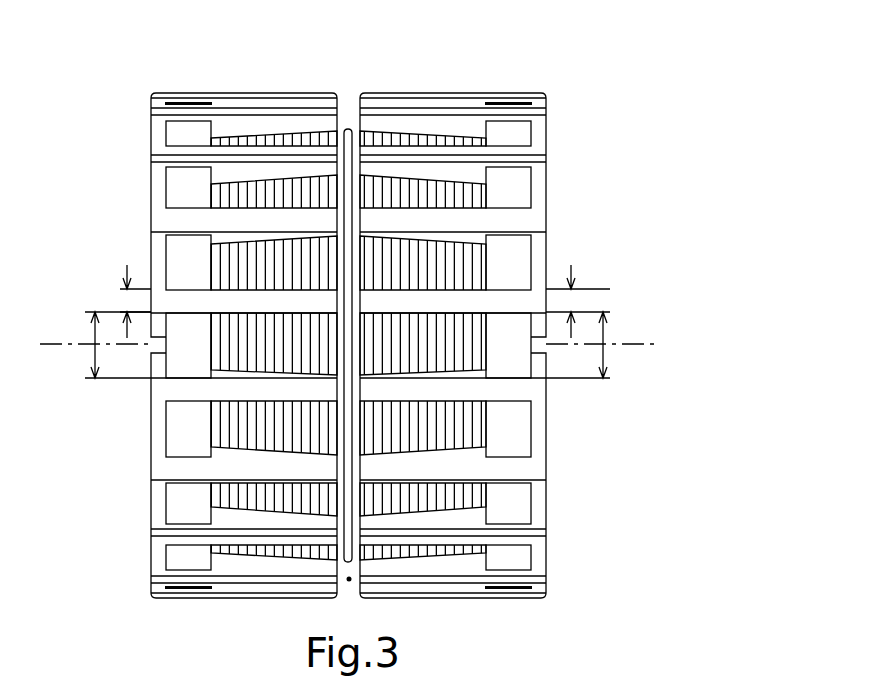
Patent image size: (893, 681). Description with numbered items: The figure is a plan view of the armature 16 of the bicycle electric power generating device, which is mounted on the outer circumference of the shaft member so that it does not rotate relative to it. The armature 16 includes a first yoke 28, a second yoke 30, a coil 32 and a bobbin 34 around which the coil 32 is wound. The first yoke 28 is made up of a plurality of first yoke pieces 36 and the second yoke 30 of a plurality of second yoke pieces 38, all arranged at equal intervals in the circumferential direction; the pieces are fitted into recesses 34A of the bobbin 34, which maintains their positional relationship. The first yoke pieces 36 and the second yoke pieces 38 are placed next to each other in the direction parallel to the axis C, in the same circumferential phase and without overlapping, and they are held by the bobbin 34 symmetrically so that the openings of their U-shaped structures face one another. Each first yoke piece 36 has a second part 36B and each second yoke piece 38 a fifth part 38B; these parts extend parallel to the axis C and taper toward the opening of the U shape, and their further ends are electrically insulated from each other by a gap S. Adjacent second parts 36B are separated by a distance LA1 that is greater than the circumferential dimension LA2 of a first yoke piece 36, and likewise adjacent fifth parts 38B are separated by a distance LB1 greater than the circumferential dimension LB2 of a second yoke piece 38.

The armature 16 is at (547, 61).
The first yoke 28 is at (245, 96).
The second yoke 30 is at (452, 96).
The coil 32 is at (349, 128).
The bobbin 34 is at (524, 186).
The recesses 34A is at (181, 458).
The first yoke pieces 36 is at (160, 153).
The second part 36B is at (322, 150).
The second yoke pieces 38 is at (537, 153).
The fifth part 38B is at (375, 150).
The gap S is at (349, 581).
The axis C is at (642, 350).
The distance LA1 is at (90, 334).
The dimension LA2 is at (119, 300).
The distance LB1 is at (606, 334).
The dimension LB2 is at (574, 302).